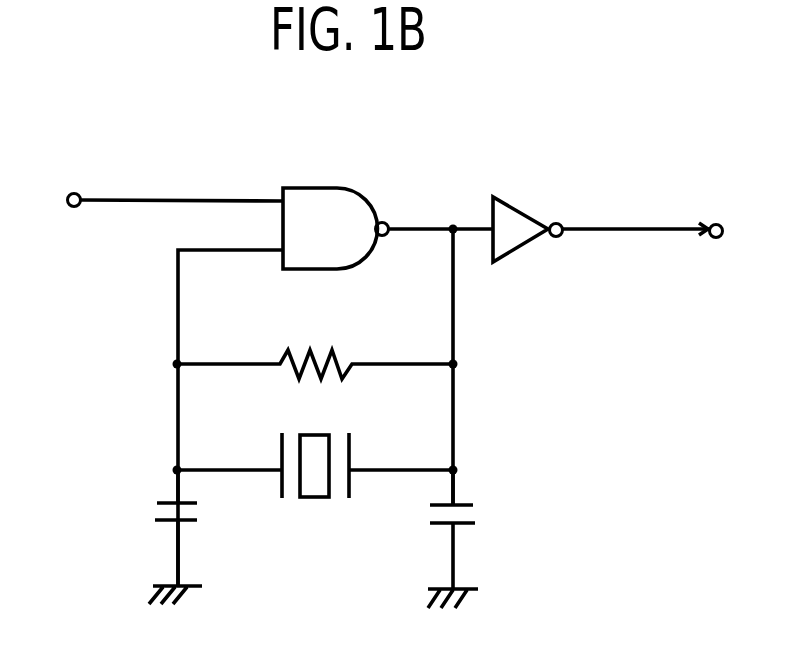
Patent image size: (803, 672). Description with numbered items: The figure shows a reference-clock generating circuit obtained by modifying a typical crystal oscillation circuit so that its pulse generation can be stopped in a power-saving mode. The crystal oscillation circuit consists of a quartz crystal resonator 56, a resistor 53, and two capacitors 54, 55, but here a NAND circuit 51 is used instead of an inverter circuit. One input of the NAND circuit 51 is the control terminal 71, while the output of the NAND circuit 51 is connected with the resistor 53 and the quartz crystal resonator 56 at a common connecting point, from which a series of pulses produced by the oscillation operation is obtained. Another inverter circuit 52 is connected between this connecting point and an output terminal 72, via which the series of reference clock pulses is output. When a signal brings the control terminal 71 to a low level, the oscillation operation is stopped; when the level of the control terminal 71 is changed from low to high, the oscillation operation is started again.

The control terminal 71 is at (69, 194).
The NAND circuit 51 is at (333, 188).
The inverter circuit 52 is at (520, 207).
The output terminal 72 is at (720, 223).
The resistor 53 is at (315, 342).
The capacitor 54 is at (202, 537).
The capacitor 55 is at (481, 539).
The quartz crystal resonator 56 is at (313, 498).